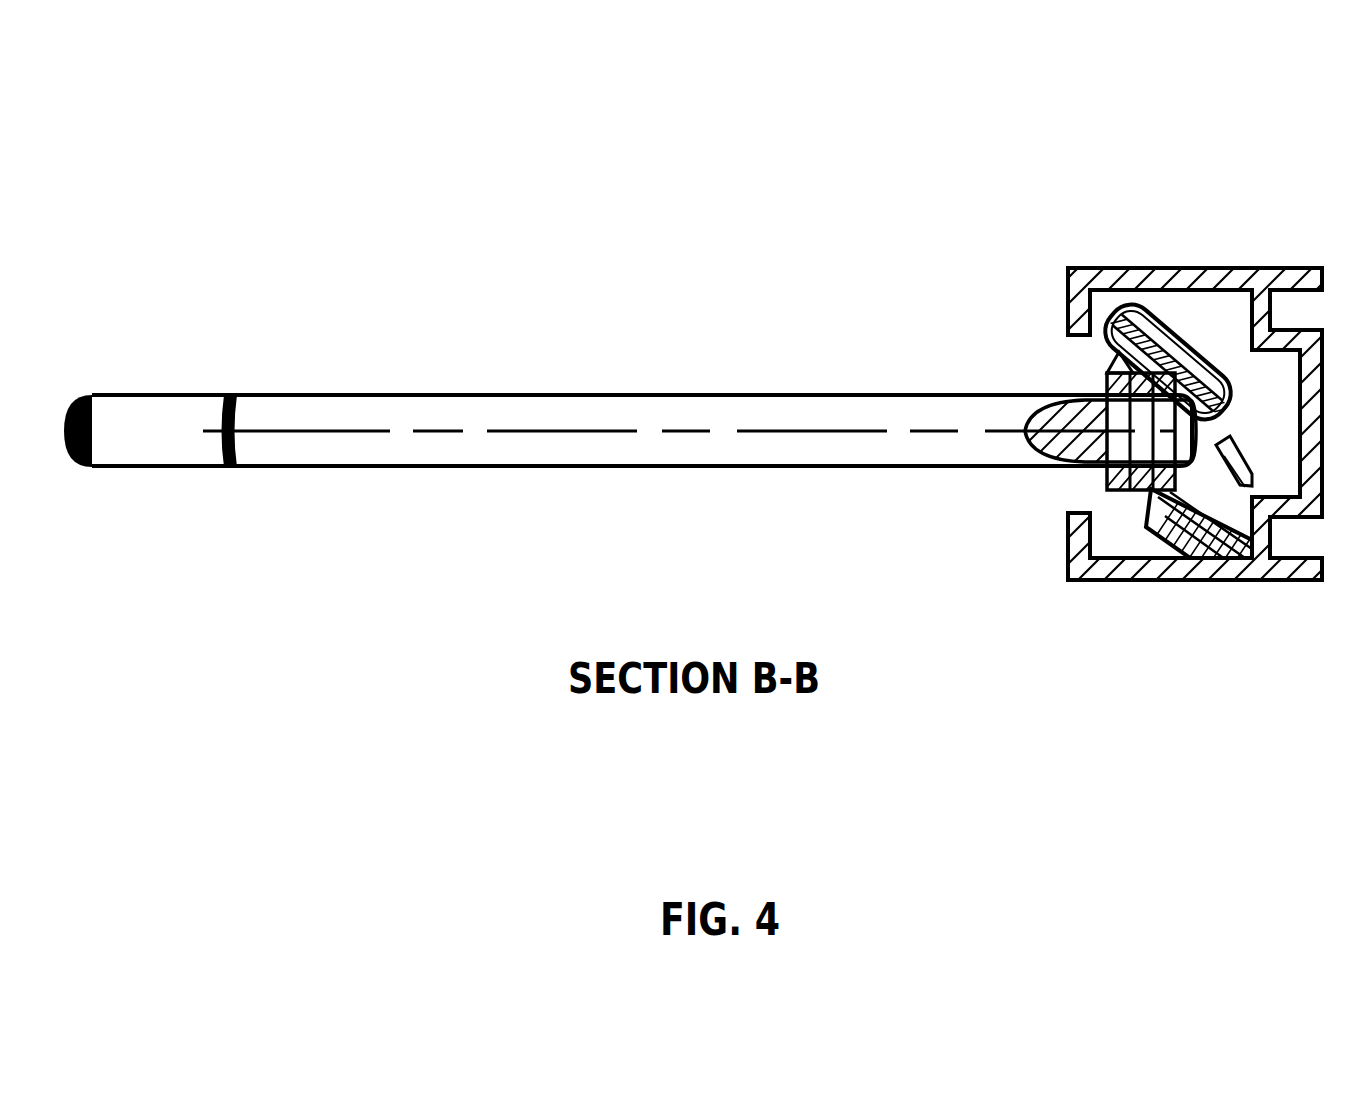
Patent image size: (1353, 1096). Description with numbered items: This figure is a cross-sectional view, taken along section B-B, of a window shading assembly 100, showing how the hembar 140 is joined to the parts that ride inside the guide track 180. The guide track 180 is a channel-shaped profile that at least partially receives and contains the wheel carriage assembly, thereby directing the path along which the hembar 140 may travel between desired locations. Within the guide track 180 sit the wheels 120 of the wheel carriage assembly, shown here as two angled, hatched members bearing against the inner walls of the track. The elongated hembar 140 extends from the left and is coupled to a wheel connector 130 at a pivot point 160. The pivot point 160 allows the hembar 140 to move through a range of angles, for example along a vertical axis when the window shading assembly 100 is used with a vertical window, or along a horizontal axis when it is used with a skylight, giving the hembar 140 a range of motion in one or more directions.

The window shading assembly 100 is at (404, 76).
The wheel 120 is at (1165, 323).
The wheel connector 130 is at (1150, 465).
The hembar 140 is at (278, 410).
The pivot point 160 is at (1150, 422).
The guide track 180 is at (1162, 267).